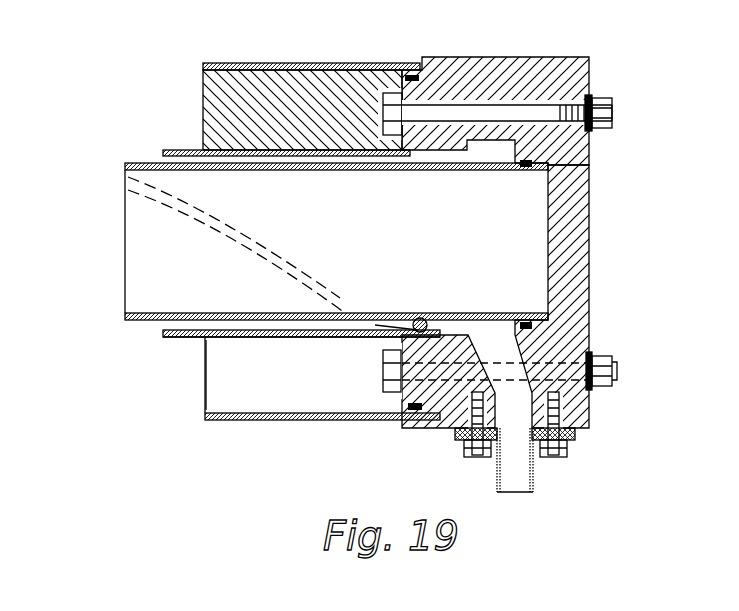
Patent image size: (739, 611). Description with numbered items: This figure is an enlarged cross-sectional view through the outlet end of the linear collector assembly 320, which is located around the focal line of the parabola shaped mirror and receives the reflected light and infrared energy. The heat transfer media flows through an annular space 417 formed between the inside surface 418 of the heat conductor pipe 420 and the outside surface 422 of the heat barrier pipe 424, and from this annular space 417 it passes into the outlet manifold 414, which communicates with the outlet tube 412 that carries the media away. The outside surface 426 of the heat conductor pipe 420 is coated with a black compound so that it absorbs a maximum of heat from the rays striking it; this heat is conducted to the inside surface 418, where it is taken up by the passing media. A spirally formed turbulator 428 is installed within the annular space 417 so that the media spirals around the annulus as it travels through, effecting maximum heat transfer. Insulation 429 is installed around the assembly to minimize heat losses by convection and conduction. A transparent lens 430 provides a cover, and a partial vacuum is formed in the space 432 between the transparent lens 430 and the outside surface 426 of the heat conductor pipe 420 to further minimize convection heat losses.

The linear collector assembly 320 is at (172, 106).
The insulation 429 is at (283, 97).
The outlet manifold 414 is at (590, 230).
The outlet tube 412 is at (534, 470).
The annular space 417 is at (200, 158).
The outside surface of heat barrier pipe 422 is at (127, 163).
The heat barrier pipe 424 is at (127, 175).
The inside surface of heat conductor pipe 418 is at (165, 323).
The heat conductor pipe 420 is at (166, 334).
The outside surface of heat conductor pipe 426 is at (178, 338).
The transparent lens 430 is at (267, 419).
The space 432 is at (290, 372).
The spirally formed turbulator 428 is at (360, 345).